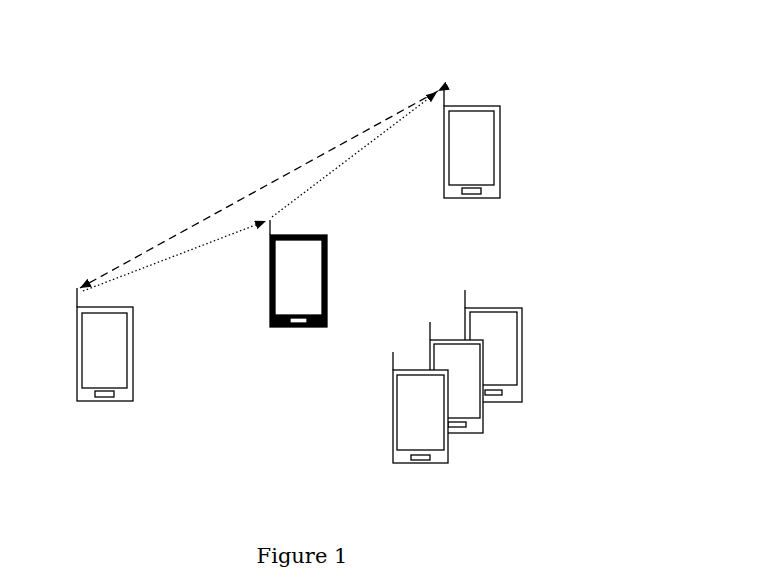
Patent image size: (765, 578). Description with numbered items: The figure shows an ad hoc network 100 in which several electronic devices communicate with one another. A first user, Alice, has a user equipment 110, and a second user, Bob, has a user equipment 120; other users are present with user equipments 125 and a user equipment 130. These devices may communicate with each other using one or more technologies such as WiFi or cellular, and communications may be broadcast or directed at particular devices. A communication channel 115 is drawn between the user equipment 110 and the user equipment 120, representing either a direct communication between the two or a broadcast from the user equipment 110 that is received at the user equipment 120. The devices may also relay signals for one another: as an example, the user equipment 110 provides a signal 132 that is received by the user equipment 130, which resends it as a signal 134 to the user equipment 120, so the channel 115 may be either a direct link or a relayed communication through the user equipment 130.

The wireless communication system 100 is at (164, 89).
The user equipment 110 is at (106, 405).
The communication channel 115 is at (306, 160).
The user equipment 120 is at (474, 204).
The user equipments 125 is at (494, 405).
The user equipment 130 is at (300, 332).
The signal 132 is at (198, 249).
The signal 134 is at (364, 157).